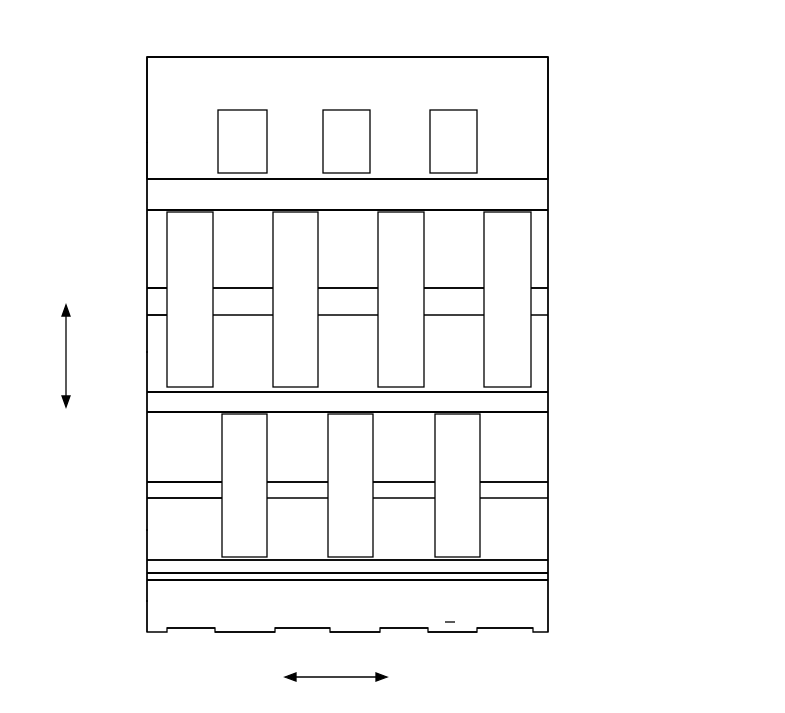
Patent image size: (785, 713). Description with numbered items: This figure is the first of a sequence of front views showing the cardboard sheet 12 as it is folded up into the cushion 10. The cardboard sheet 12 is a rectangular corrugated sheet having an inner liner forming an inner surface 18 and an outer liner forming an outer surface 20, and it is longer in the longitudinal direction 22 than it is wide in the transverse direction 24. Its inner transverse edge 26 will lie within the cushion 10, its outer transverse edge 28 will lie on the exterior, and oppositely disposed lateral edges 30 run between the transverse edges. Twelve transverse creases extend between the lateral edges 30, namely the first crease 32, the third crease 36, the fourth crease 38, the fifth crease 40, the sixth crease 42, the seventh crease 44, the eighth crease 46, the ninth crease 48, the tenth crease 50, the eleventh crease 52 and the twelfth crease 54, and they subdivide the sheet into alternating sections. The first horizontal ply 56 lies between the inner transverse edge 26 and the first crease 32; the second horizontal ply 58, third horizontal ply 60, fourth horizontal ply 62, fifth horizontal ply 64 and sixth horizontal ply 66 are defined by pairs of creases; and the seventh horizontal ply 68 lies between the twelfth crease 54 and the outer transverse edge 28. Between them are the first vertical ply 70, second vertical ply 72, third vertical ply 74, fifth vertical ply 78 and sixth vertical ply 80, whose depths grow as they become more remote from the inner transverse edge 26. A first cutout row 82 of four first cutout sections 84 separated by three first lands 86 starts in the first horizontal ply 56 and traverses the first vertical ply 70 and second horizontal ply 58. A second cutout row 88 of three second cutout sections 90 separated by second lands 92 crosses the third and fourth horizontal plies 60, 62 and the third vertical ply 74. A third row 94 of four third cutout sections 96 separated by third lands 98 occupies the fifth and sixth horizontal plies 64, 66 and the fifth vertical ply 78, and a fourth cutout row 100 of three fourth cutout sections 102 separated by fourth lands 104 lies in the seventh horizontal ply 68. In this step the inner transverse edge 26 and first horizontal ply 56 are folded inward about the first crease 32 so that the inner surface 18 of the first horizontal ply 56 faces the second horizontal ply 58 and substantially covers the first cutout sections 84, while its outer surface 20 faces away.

The cushion 10 is at (143, 50).
The cardboard sheet 12 is at (345, 344).
The inner surface 18 is at (206, 97).
The outer surface 20 is at (303, 362).
The longitudinal direction 22 is at (64, 357).
The transverse direction 24 is at (333, 677).
The inner transverse edge 26 is at (218, 577).
The outer transverse edge 28 is at (437, 56).
The lateral edges 30 is at (145, 82).
The first crease 32 is at (148, 632).
The third crease 36 is at (550, 579).
The fourth crease 38 is at (538, 560).
The fifth crease 40 is at (538, 499).
The sixth crease 42 is at (538, 482).
The seventh crease 44 is at (548, 413).
The eighth crease 46 is at (538, 389).
The ninth crease 48 is at (537, 315).
The tenth crease 50 is at (537, 288).
The eleventh crease 52 is at (550, 212).
The twelfth crease 54 is at (540, 177).
The first horizontal ply 56 is at (450, 620).
The second horizontal ply 58 is at (477, 576).
The third horizontal ply 60 is at (548, 525).
The fourth horizontal ply 62 is at (548, 443).
The fifth horizontal ply 64 is at (548, 351).
The sixth horizontal ply 66 is at (548, 247).
The seventh horizontal ply 68 is at (535, 129).
The first vertical ply 70 is at (347, 344).
The second vertical ply 72 is at (156, 569).
The third vertical ply 74 is at (158, 491).
The fifth vertical ply 78 is at (158, 304).
The sixth vertical ply 80 is at (157, 194).
The first cutout row 82 is at (137, 601).
The first cutout sections 84 is at (192, 634).
The first lands 86 is at (245, 632).
The second cutout row 88 is at (137, 530).
The second cutout sections 90 is at (267, 465).
The second lands 92 is at (174, 459).
The third row 94 is at (137, 352).
The third cutout sections 96 is at (213, 300).
The third lands 98 is at (232, 262).
The fourth cutout row 100 is at (137, 142).
The fourth cutout sections 102 is at (267, 142).
The fourth lands 104 is at (168, 152).